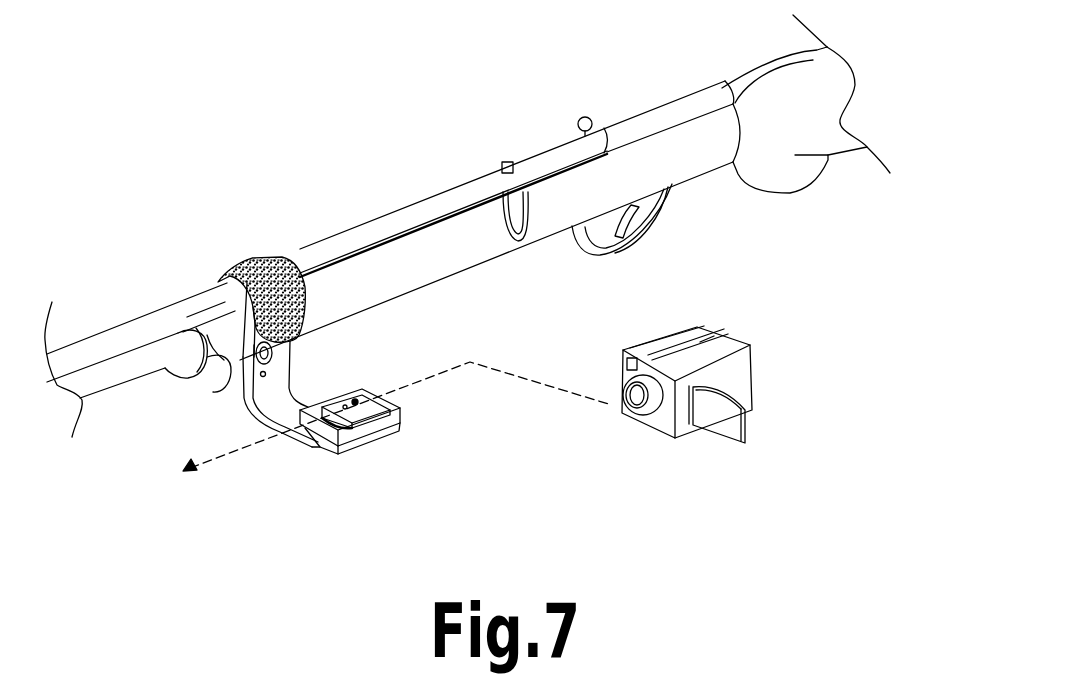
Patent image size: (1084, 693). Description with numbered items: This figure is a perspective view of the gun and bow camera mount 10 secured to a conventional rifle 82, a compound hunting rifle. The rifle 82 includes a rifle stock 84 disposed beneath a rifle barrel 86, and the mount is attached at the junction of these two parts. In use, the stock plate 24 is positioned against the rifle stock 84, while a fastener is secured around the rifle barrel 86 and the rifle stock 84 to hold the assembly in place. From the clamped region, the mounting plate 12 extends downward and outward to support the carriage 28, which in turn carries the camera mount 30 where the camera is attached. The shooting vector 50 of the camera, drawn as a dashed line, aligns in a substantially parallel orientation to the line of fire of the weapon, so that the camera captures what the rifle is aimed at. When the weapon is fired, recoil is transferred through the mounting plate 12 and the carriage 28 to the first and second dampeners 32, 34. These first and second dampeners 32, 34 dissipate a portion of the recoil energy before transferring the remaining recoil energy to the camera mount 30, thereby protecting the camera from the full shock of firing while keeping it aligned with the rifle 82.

The gun and bow camera mount 10 is at (238, 407).
The mounting plate 12 is at (288, 362).
The stock plate 24 is at (219, 389).
The carriage 28 is at (352, 392).
The camera mount 30 is at (367, 417).
The first dampener 32 is at (313, 433).
The second dampener 34 is at (400, 408).
The shooting vector 50 is at (226, 455).
The rifle 82 is at (450, 146).
The rifle stock 84 is at (465, 268).
The rifle barrel 86 is at (344, 233).